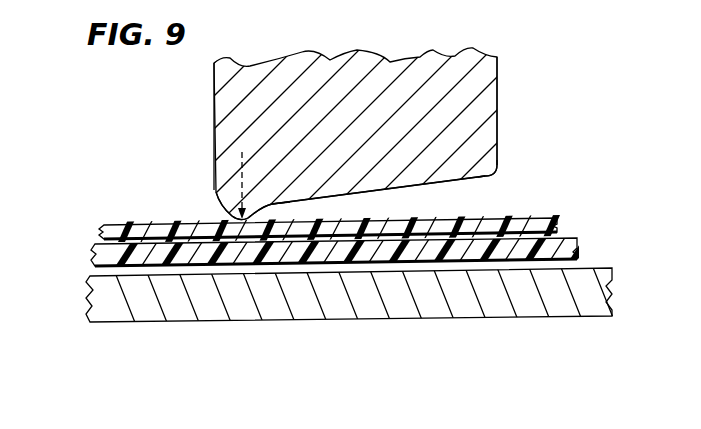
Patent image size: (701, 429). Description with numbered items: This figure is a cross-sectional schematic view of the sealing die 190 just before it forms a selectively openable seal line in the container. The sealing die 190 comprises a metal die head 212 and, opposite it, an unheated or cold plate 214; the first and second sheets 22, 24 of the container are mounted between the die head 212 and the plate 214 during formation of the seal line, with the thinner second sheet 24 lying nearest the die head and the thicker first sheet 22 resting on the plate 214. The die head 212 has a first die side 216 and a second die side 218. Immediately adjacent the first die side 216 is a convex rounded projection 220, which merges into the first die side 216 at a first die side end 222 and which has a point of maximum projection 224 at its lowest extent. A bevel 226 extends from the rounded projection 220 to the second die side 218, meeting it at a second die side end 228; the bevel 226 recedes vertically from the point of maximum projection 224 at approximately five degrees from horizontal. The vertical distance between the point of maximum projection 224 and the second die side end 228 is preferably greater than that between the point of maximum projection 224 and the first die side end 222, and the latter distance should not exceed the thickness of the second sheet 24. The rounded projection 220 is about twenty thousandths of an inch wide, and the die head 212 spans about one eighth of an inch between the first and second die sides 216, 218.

The sealing die 190 is at (512, 74).
The metal die head 212 is at (488, 98).
The first die side 216 is at (214, 86).
The second die side 218 is at (497, 129).
The convex rounded projection 220 is at (225, 212).
The first die side end 222 is at (218, 195).
The point of maximum projection 224 is at (270, 208).
The bevel 226 is at (412, 186).
The second die side end 228 is at (497, 170).
The second sheet 24 is at (108, 232).
The first sheet 22 is at (97, 258).
The unheated plate 214 is at (95, 310).